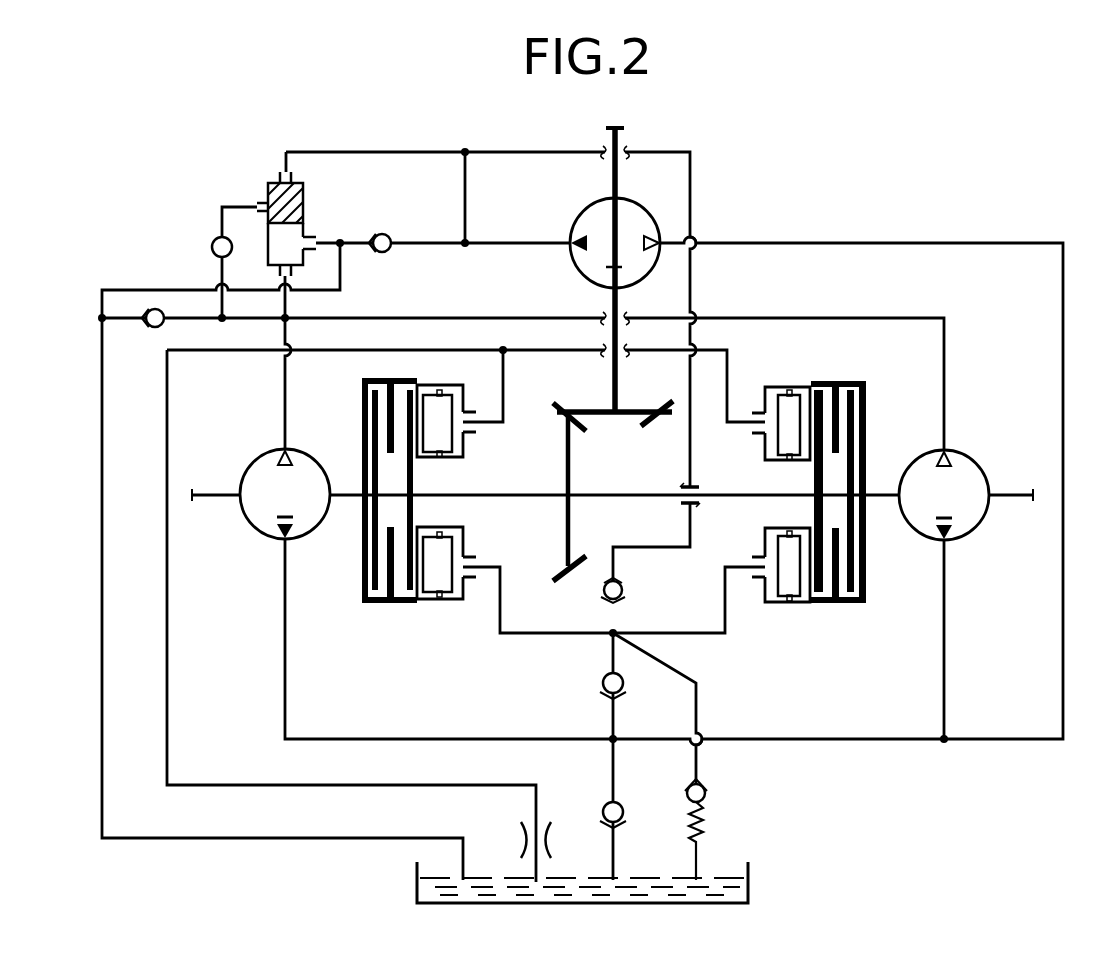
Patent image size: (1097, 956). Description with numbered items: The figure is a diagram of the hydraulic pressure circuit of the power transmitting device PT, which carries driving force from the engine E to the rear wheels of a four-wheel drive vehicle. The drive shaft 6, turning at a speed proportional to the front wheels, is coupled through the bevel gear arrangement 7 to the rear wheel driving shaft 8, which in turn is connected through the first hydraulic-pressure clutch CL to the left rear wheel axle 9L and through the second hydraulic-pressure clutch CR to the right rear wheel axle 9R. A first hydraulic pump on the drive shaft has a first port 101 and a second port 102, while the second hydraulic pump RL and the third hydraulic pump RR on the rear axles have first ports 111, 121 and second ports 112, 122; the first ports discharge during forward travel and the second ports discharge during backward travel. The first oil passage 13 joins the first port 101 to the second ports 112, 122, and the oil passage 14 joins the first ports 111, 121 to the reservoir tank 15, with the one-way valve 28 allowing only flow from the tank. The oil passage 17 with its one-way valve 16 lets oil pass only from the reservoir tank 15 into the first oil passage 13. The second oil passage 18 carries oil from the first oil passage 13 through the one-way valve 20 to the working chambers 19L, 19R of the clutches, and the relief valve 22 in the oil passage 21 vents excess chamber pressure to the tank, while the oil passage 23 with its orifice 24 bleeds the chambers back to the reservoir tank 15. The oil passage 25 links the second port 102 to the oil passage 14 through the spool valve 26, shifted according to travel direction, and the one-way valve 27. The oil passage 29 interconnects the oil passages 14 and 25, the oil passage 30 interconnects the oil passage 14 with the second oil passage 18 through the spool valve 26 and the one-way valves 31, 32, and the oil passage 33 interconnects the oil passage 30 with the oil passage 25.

The drive shaft 6 is at (607, 176).
The bevel gear arrangement 7 is at (601, 440).
The rear wheel driving shaft 8 is at (667, 489).
The left rear wheel axle 9L is at (223, 489).
The right rear wheel axle 9R is at (1012, 492).
The first port 101 is at (653, 237).
The second port 102 is at (574, 244).
The first port 111 is at (293, 451).
The second port 112 is at (296, 541).
The first port 121 is at (936, 452).
The second port 122 is at (937, 542).
The first oil passage 13 is at (1062, 364).
The oil passage 14 is at (289, 396).
The reservoir tank 15 is at (752, 882).
The one-way valve 16 is at (626, 815).
The oil passage 17 is at (610, 768).
The second oil passage 18 is at (533, 632).
The working chamber 19L is at (464, 446).
The working chamber 19R is at (758, 456).
The one-way valve 20 is at (603, 690).
The oil passage 21 is at (693, 692).
The relief valve 22 is at (707, 797).
The oil passage 23 is at (735, 386).
The orifice 24 is at (519, 835).
The oil passage 25 is at (514, 246).
The spool valve 26 is at (306, 208).
The one-way valve 27 is at (389, 237).
The one-way valve 28 is at (148, 326).
The oil passage 29 is at (246, 289).
The oil passage 30 is at (553, 155).
The one-way valve 31 is at (211, 247).
The one-way valve 32 is at (600, 591).
The oil passage 33 is at (469, 203).
The engine E is at (615, 243).
The power transmitting device PT is at (731, 228).
The second hydraulic pump RL is at (285, 494).
The third hydraulic pump RR is at (944, 495).
The first hydraulic-pressure clutch CL is at (393, 612).
The second hydraulic-pressure clutch CR is at (833, 612).